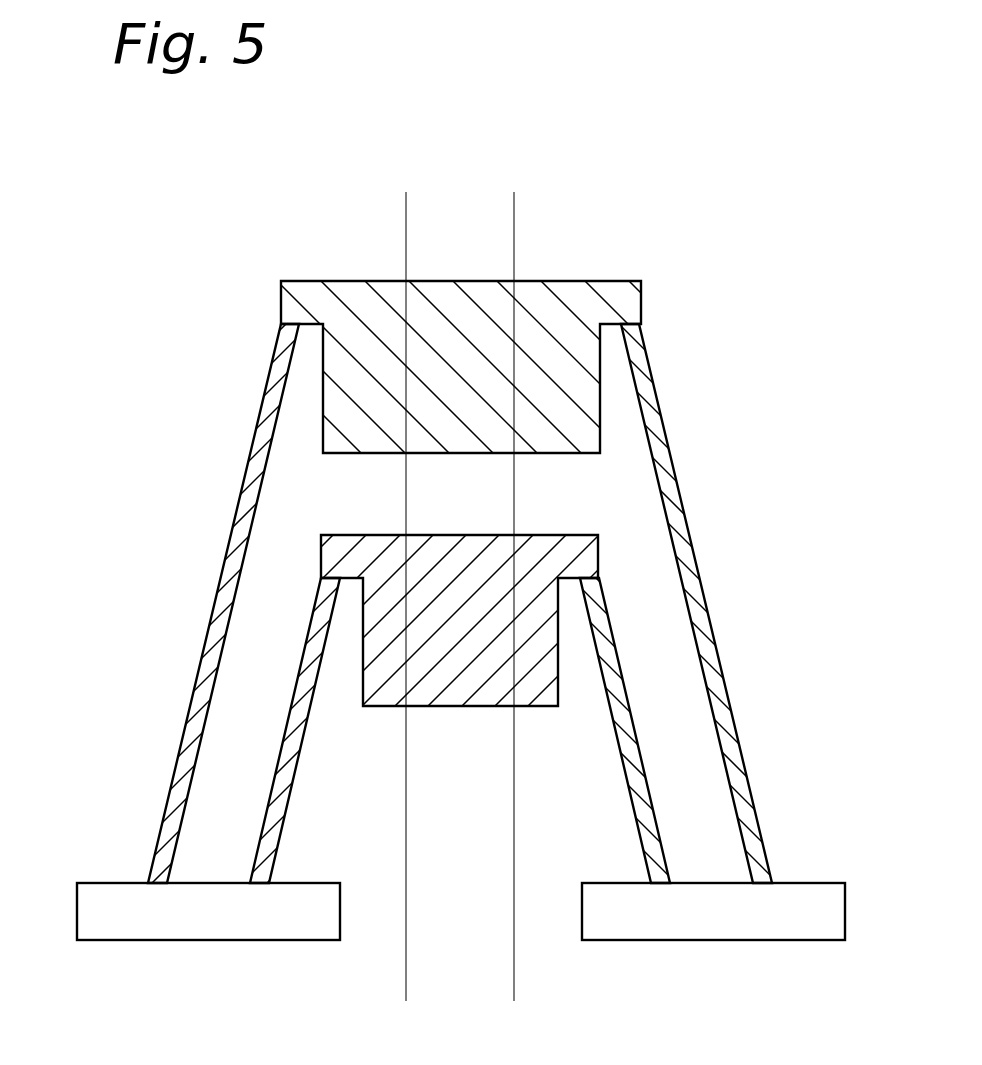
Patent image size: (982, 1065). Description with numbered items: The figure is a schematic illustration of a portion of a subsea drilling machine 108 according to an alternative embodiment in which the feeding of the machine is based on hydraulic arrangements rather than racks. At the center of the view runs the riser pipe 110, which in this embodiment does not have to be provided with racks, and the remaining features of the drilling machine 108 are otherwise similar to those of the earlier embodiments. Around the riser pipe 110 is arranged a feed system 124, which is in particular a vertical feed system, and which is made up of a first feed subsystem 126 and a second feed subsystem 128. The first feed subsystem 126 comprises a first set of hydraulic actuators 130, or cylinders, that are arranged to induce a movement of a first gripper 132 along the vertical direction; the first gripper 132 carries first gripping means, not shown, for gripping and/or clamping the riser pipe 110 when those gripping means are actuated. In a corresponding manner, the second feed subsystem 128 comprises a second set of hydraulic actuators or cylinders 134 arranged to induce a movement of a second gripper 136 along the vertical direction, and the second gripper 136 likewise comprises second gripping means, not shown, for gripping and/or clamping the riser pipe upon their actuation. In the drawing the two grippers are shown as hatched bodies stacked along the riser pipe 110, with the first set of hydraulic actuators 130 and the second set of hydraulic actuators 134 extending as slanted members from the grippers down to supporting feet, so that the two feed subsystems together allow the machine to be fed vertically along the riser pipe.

The subsea drilling machine 108 is at (195, 243).
The riser pipe 110 is at (514, 217).
The feed system 124 is at (147, 523).
The first feed subsystem 126 is at (662, 662).
The second feed subsystem 128 is at (495, 316).
The first set of hydraulic actuators 130 is at (292, 763).
The first gripper 132 is at (582, 560).
The second set of hydraulic actuators 134 is at (262, 443).
The second gripper 136 is at (625, 303).